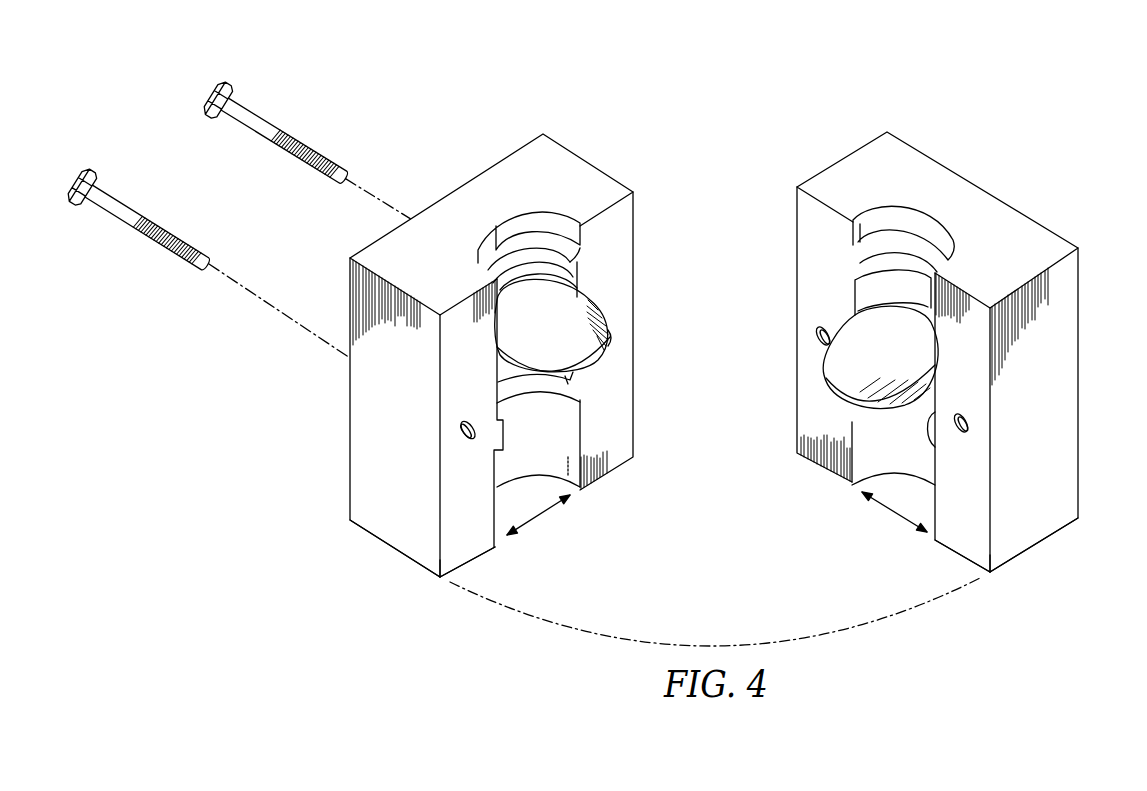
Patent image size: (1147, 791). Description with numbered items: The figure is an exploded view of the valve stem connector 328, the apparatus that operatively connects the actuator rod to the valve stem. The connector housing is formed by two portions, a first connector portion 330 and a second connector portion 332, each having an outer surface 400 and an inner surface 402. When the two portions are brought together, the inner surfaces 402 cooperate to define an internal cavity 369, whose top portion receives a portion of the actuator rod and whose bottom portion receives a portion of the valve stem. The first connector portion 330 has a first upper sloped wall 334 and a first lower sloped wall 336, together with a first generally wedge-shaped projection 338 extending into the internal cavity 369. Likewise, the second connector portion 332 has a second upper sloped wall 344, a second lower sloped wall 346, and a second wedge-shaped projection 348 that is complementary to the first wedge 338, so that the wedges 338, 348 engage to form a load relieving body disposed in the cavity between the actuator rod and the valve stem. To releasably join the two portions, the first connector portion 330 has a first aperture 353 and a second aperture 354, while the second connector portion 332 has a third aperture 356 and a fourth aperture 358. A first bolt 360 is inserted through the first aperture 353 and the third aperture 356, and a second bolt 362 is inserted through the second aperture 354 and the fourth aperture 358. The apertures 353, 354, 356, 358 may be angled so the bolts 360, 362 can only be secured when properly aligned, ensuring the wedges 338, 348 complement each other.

The valve stem connector 328 is at (946, 78).
The first connector portion 330 is at (495, 167).
The second connector portion 332 is at (982, 183).
The first upper sloped wall 334 is at (567, 262).
The first lower sloped wall 336 is at (558, 382).
The first wedge-shaped projection 338 is at (571, 341).
The second upper sloped wall 344 is at (866, 258).
The second lower sloped wall 346 is at (926, 418).
The second wedge-shaped projection 348 is at (902, 361).
The first aperture 353 is at (463, 436).
The second aperture 354 is at (612, 340).
The third aperture 356 is at (967, 435).
The fourth aperture 358 is at (817, 336).
The first bolt 360 is at (106, 220).
The second bolt 362 is at (255, 103).
The internal cavity 369 is at (547, 228).
The outer surface 400 is at (395, 538).
The inner surface 402 is at (478, 543).